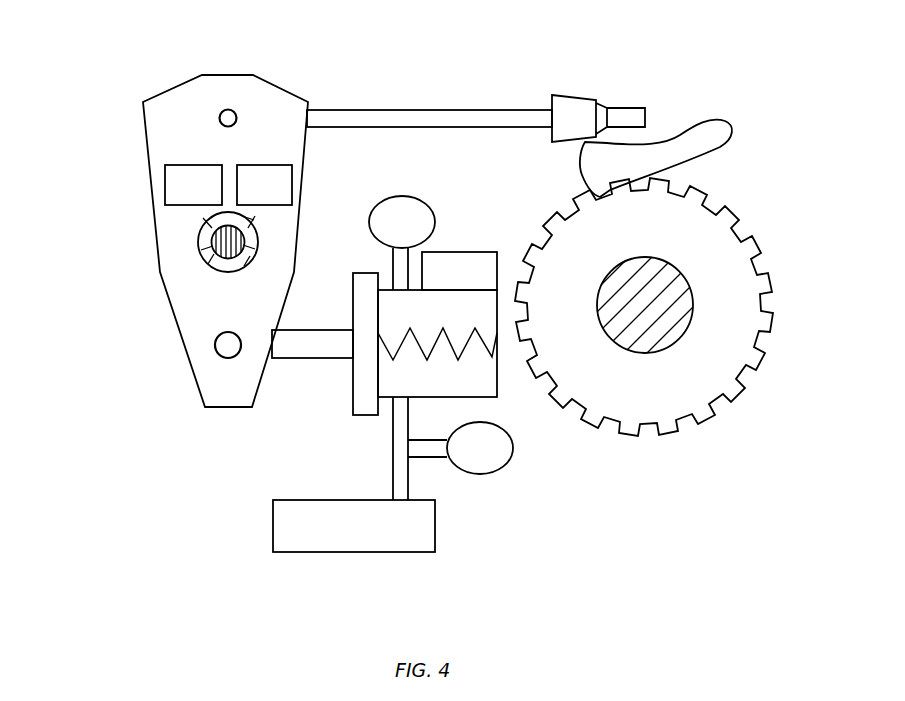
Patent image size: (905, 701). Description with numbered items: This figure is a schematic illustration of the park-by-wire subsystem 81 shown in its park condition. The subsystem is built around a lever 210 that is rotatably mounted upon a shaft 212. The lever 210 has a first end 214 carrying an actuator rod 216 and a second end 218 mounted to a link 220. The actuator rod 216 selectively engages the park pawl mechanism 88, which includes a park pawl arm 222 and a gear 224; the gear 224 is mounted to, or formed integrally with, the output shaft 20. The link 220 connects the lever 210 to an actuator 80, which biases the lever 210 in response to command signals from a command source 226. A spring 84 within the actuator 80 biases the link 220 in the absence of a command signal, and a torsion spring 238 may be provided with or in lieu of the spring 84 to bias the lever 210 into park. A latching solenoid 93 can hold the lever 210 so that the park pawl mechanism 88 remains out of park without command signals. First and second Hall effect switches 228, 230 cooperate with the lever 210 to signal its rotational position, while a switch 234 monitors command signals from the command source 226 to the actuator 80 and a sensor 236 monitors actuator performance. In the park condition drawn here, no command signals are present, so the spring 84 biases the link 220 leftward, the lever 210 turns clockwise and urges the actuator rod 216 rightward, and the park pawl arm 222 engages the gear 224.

The park-by-wire subsystem 81 is at (90, 97).
The lever 210 is at (163, 242).
The first end 214 is at (262, 88).
The second end 218 is at (212, 377).
The first Hall effect switch 228 is at (193, 185).
The second Hall effect switch 230 is at (264, 185).
The shaft 212 is at (243, 217).
The torsion spring 238 is at (207, 258).
The actuator rod 216 is at (410, 118).
The park pawl arm 222 is at (670, 143).
The park pawl mechanism 88 is at (768, 167).
The gear 224 is at (748, 298).
The output shaft 20 is at (690, 317).
The link 220 is at (303, 353).
The spring 84 is at (398, 350).
The actuator 80 is at (487, 387).
The latching solenoid 93 is at (452, 262).
The sensor 236 is at (402, 243).
The switch 234 is at (460, 448).
The command source 226 is at (354, 474).